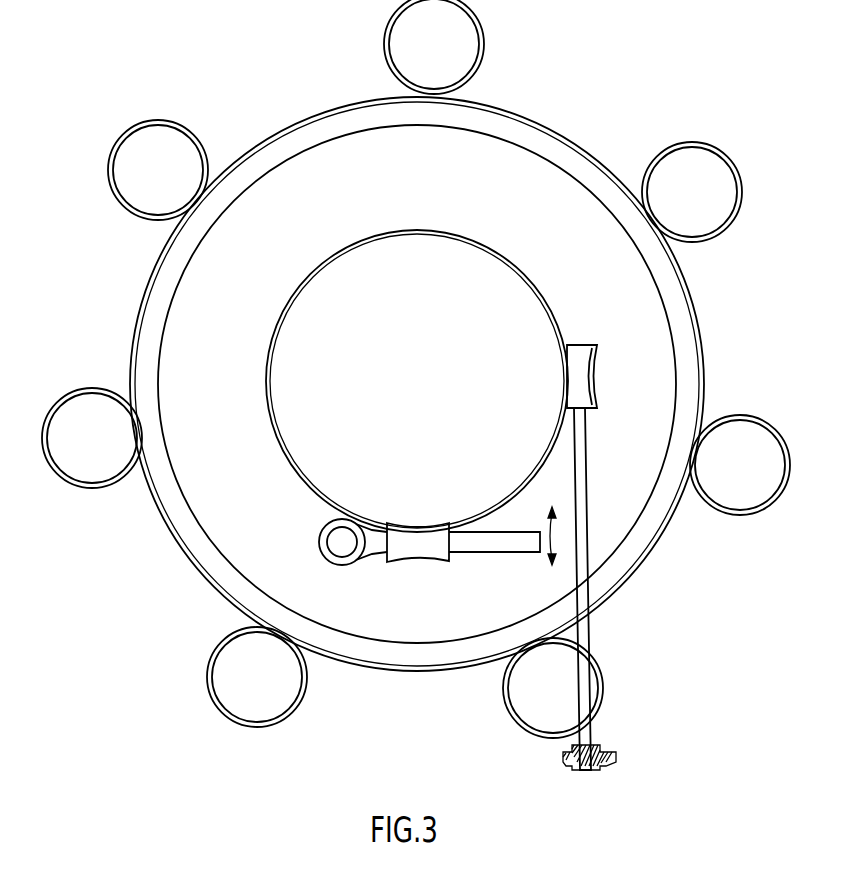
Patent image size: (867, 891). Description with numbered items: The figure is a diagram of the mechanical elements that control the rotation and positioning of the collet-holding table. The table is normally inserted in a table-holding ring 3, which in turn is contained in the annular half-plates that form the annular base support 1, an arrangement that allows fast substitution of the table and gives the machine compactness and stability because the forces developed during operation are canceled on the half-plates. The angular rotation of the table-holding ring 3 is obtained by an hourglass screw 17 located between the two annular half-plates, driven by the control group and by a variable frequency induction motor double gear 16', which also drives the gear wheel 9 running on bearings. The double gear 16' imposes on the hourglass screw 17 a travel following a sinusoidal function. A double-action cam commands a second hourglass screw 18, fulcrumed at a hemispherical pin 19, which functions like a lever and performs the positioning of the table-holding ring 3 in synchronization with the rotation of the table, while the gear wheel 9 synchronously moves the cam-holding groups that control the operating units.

The annular base support 1 is at (638, 326).
The table-holding ring 3 is at (538, 282).
The gear wheel 9 is at (577, 140).
The variable frequency induction motor double gear 16' is at (416, 384).
The hourglass screw 17 is at (588, 463).
The hourglass screw 18 is at (428, 548).
The hemispherical pin 19 is at (338, 552).